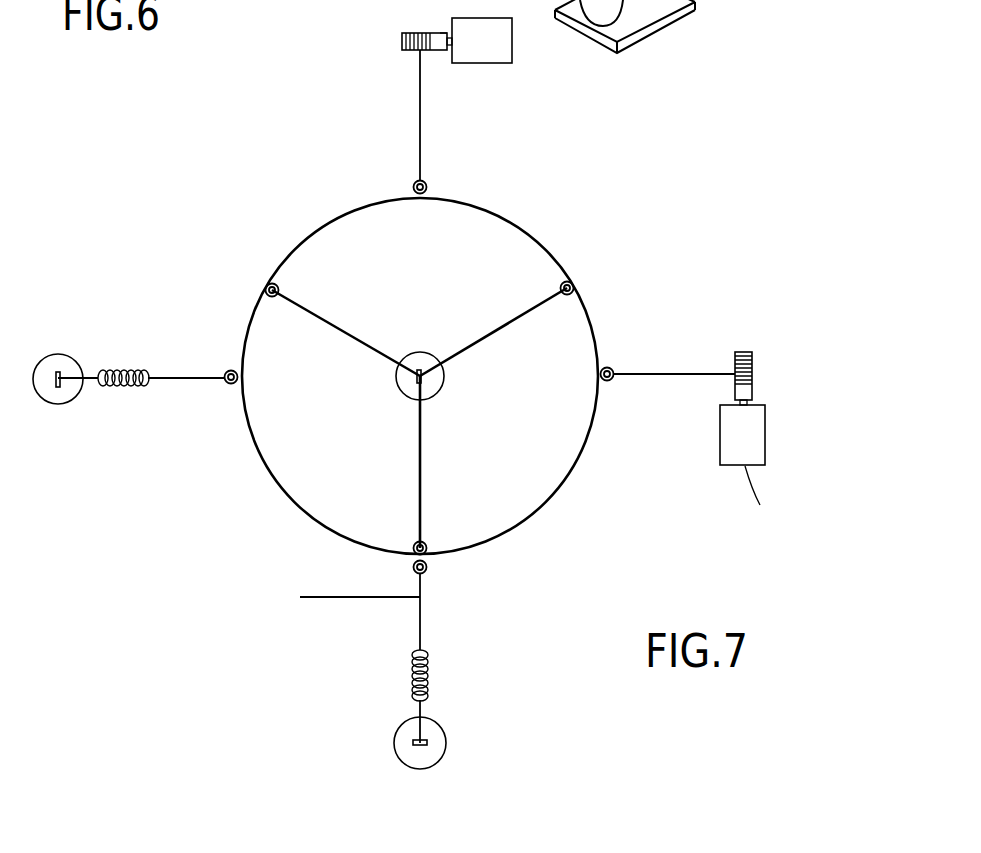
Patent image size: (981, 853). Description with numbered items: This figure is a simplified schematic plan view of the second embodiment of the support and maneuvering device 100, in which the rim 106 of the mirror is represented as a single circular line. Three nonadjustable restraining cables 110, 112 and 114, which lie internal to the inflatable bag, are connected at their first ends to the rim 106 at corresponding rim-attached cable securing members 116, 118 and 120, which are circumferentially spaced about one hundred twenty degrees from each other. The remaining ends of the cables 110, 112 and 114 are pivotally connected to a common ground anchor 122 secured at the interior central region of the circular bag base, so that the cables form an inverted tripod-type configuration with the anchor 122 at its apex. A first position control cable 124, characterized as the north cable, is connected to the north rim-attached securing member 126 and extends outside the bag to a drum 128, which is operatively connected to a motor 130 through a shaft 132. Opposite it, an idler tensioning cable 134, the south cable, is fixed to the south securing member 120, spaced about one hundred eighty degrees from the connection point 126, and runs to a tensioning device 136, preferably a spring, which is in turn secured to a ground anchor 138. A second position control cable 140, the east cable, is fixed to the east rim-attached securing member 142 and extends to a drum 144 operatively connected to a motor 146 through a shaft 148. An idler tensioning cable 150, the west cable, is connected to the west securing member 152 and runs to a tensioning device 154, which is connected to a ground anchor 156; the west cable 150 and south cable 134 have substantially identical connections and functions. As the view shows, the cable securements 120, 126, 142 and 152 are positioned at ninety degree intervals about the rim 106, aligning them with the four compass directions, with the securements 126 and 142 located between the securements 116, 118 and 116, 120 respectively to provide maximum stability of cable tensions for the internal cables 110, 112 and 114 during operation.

The support and maneuvering device 100 is at (190, 565).
The rim 106 is at (318, 225).
The nonadjustable restraining cable 110 is at (515, 317).
The nonadjustable restraining cable 112 is at (340, 327).
The nonadjustable restraining cable 114 is at (425, 488).
The rim-attached cable securing member 116 is at (575, 284).
The rim-attached cable securing member 118 is at (270, 283).
The rim-attached cable securing member 120 is at (428, 567).
The common ground anchor 122 is at (442, 385).
The first position control cable 124 is at (420, 137).
The north rim-attached securing member 126 is at (428, 183).
The drum 128 is at (402, 40).
The motor 130 is at (482, 57).
The shaft 132 is at (450, 33).
The idler tensioning cable 134 is at (339, 611).
The tensioning device 136 is at (428, 667).
The ground anchor 138 is at (425, 740).
The second position control cable 140 is at (712, 375).
The east rim-attached securing member 142 is at (613, 368).
The drum 144 is at (742, 350).
The motor 146 is at (760, 505).
The shaft 148 is at (753, 400).
The idler tensioning cable 150 is at (185, 379).
The west rim-attached securing member 152 is at (228, 385).
The tensioning device 154 is at (128, 368).
The ground anchor 156 is at (60, 355).